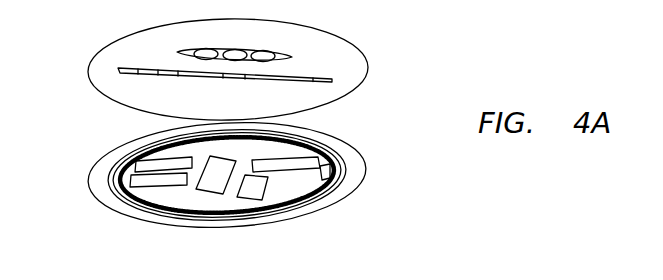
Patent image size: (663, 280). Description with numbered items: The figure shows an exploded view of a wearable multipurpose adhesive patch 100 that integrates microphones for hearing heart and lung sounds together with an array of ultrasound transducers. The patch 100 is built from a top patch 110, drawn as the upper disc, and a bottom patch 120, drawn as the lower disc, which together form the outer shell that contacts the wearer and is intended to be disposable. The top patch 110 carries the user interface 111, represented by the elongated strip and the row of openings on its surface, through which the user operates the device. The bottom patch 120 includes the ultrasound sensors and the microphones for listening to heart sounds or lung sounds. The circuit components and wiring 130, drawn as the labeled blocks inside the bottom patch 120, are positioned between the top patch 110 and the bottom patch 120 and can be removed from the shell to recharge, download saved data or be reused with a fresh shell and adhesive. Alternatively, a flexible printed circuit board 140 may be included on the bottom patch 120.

The multipurpose adhesive patch 100 is at (299, 228).
The top patch 110 is at (112, 53).
The user interface 111 is at (122, 78).
The bottom patch 120 is at (357, 193).
The circuit components and wiring 130 is at (177, 195).
The flexible printed circuit board 140 is at (325, 167).